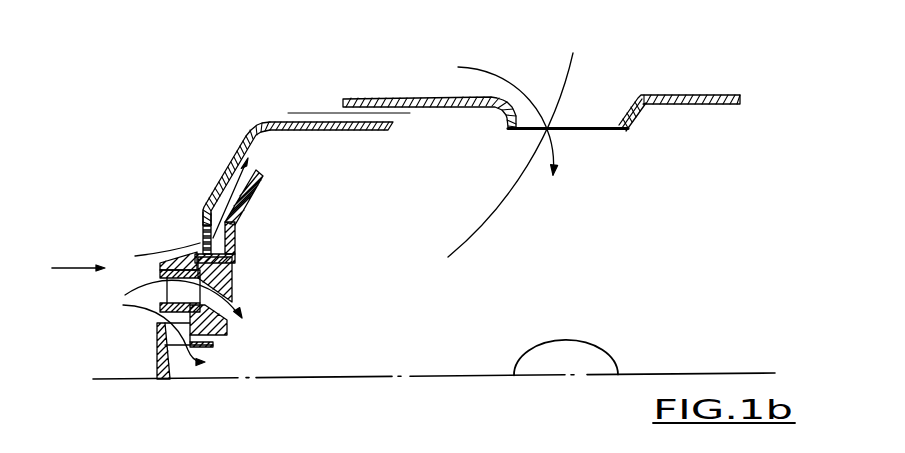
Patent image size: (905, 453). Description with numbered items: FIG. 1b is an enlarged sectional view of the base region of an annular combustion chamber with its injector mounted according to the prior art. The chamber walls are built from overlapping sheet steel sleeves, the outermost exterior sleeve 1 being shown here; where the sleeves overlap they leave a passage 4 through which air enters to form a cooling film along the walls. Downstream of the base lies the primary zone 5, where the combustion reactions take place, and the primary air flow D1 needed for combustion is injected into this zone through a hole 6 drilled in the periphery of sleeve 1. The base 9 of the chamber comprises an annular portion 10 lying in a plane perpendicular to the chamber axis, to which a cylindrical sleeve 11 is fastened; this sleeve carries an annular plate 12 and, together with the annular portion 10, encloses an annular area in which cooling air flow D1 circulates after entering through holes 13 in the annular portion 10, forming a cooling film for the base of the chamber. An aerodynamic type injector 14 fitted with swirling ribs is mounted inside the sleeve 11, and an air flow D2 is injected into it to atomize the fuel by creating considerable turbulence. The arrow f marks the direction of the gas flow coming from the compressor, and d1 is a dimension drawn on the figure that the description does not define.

The exterior sheet steel sleeve 1 is at (407, 102).
The passage 4 is at (352, 115).
The primary zone 5 is at (513, 145).
The hole 6 is at (604, 127).
The base of the chamber 9 is at (203, 170).
The annular portion 10 is at (203, 213).
The cylindrical sleeve 11 is at (233, 272).
The annular plate 12 is at (233, 239).
The hole 13 is at (203, 234).
The aerodynamic type injector 14 is at (157, 357).
The primary air flow D1 is at (503, 109).
The injector air flow D2 is at (164, 322).
The diameter d1 is at (149, 256).
The direction of gas flow f is at (78, 257).